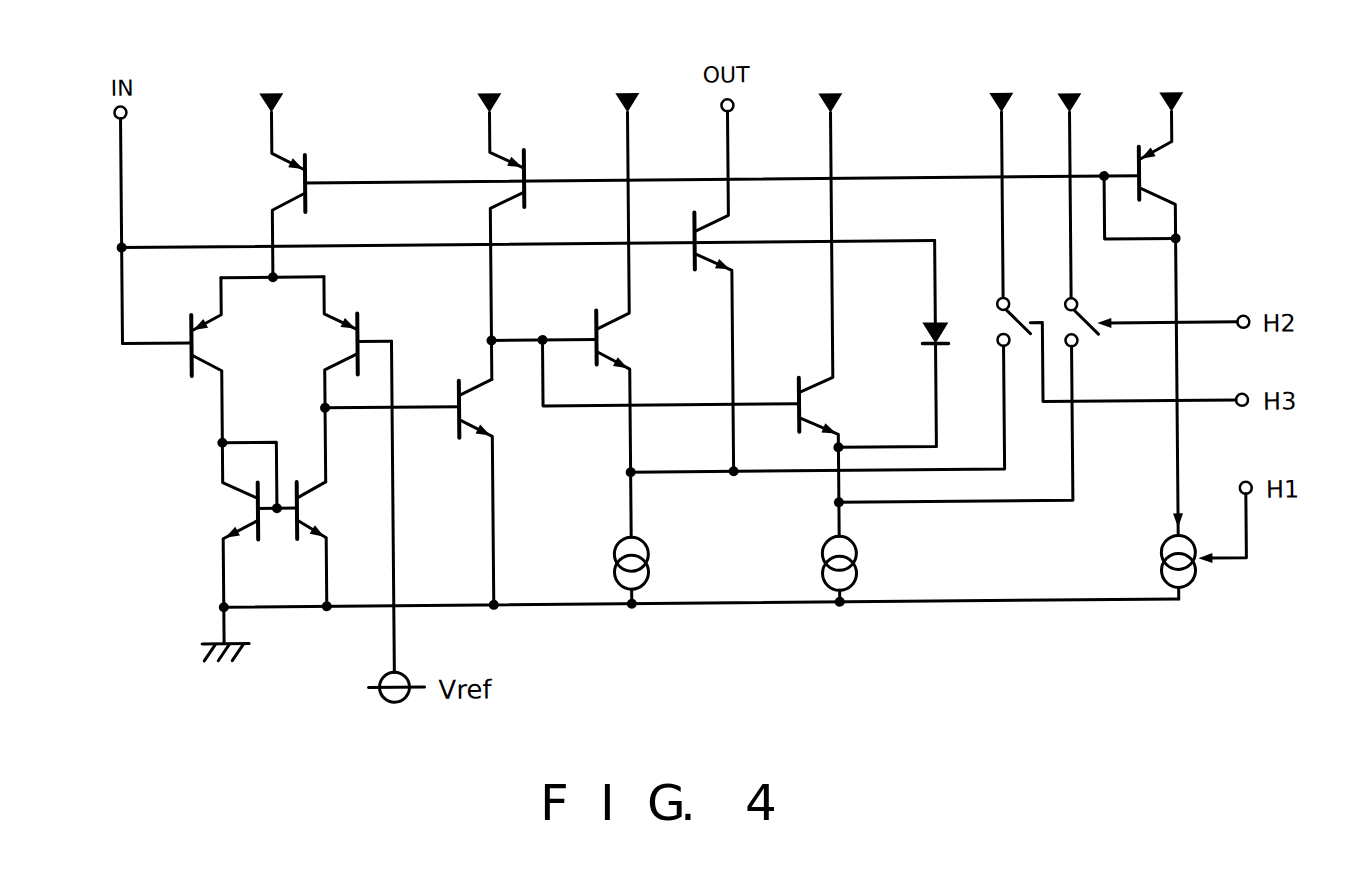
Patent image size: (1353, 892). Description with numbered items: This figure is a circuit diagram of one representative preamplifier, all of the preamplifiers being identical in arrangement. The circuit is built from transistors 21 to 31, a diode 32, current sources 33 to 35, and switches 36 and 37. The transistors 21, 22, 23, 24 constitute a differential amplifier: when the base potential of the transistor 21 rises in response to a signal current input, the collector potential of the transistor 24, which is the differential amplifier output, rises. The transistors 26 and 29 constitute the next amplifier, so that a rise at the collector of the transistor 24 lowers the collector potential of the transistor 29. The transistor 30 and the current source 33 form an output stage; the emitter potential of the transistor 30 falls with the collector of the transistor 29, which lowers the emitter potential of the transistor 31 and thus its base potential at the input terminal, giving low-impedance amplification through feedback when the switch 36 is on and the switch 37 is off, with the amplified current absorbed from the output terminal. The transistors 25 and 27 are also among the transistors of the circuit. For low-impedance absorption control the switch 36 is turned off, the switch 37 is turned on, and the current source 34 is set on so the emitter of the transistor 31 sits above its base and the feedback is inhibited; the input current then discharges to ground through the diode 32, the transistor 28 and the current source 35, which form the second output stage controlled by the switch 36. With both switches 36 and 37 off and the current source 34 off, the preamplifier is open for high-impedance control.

The transistor 21 is at (203, 347).
The transistor 22 is at (346, 350).
The transistor 23 is at (232, 507).
The transistor 24 is at (316, 511).
The transistor 25 is at (295, 143).
The transistor 26 is at (506, 143).
The transistor 27 is at (1158, 186).
The transistor 28 is at (816, 406).
The transistor 29 is at (474, 412).
The transistor 30 is at (618, 346).
The transistor 31 is at (718, 238).
The diode 32 is at (924, 328).
The current source 33 is at (649, 566).
The current source 34 is at (1183, 580).
The current source 35 is at (857, 569).
The switch 36 is at (1086, 311).
The switch 37 is at (1018, 310).